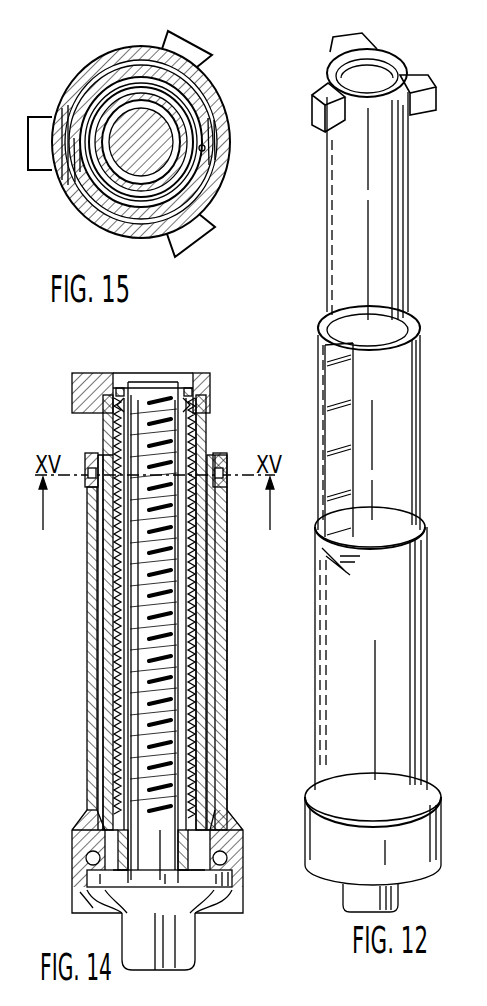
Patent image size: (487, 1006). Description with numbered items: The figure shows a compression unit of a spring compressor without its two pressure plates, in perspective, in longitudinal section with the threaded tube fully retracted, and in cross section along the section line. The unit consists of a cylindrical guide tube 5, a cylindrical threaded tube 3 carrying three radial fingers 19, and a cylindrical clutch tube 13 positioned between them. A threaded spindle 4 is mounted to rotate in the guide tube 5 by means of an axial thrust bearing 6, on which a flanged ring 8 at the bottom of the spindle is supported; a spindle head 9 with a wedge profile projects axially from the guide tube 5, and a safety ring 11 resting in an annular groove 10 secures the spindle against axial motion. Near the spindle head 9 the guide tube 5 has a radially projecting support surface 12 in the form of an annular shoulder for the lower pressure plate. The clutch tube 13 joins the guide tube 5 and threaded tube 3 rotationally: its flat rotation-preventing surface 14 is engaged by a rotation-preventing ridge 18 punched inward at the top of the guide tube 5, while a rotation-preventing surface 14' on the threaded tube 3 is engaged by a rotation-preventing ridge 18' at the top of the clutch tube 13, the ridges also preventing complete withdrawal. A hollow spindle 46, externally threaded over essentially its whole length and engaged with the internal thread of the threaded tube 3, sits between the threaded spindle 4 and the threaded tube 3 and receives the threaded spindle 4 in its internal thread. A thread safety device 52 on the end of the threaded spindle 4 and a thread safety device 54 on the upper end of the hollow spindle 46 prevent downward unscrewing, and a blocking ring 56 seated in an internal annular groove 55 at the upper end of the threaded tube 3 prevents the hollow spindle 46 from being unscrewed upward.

In FIG. 15, the threaded tube 3 is at (152, 78).
In FIG. 14, the threaded tube 3 is at (112, 610).
In FIG. 12, the threaded tube 3 is at (400, 160).
In FIG. 15, the threaded spindle 4 is at (158, 132).
In FIG. 14, the threaded spindle 4 is at (160, 385).
In FIG. 15, the guide tube 5 is at (139, 236).
In FIG. 14, the guide tube 5 is at (228, 592).
In FIG. 12, the guide tube 5 is at (415, 625).
In FIG. 14, the axial thrust bearing 6 is at (222, 860).
In FIG. 14, the flanged ring 8 is at (232, 880).
In FIG. 14, the spindle head 9 is at (185, 950).
In FIG. 12, the spindle head 9 is at (392, 898).
In FIG. 14, the annular groove 10 is at (93, 906).
In FIG. 14, the safety ring 11 is at (215, 912).
In FIG. 14, the support surface 12 is at (233, 820).
In FIG. 12, the support surface 12 is at (430, 792).
In FIG. 15, the clutch tube 13 is at (106, 70).
In FIG. 14, the clutch tube 13 is at (104, 563).
In FIG. 12, the clutch tube 13 is at (405, 388).
In FIG. 15, the rotation-preventing surface 14 is at (56, 126).
In FIG. 12, the rotation-preventing surface 14 is at (324, 440).
In FIG. 15, the rotation-preventing surface 14' is at (239, 140).
In FIG. 15, the rotation-preventing ridge 18 is at (60, 183).
In FIG. 12, the rotation-preventing ridge 18 is at (321, 559).
In FIG. 15, the rotation-preventing ridge 18' is at (234, 161).
In FIG. 15, the radial fingers 19 is at (192, 50).
In FIG. 14, the radial fingers 19 is at (75, 392).
In FIG. 12, the radial fingers 19 is at (422, 78).
In FIG. 15, the hollow spindle 46 is at (100, 212).
In FIG. 14, the hollow spindle 46 is at (202, 438).
In FIG. 14, the thread safety device 52 is at (212, 406).
In FIG. 14, the thread safety device 54 is at (110, 415).
In FIG. 14, the internal annular groove 55 is at (188, 385).
In FIG. 14, the blocking ring 56 is at (114, 385).